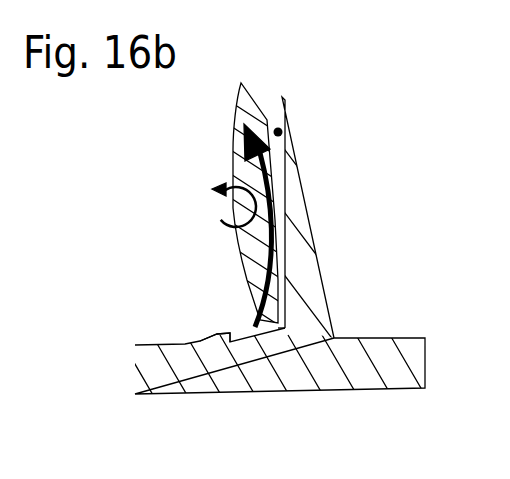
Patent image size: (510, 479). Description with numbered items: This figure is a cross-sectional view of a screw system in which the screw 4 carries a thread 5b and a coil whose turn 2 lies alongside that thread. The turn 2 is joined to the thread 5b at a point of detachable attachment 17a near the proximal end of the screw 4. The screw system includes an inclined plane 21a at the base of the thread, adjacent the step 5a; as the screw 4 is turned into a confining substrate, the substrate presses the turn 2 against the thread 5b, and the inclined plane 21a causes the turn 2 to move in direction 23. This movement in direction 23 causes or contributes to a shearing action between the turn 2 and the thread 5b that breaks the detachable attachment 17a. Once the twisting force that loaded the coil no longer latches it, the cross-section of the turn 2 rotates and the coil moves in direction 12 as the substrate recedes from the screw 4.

The coil turn 2 is at (231, 254).
The screw 4 is at (140, 358).
The step of base 5a is at (207, 332).
The thread 5b is at (323, 252).
The direction of rotation of the coil turn 12 is at (236, 210).
The point of detachable attachment 17a is at (271, 108).
The inclined plane 21a is at (254, 354).
The direction of movement of the coil turn 23 is at (248, 182).